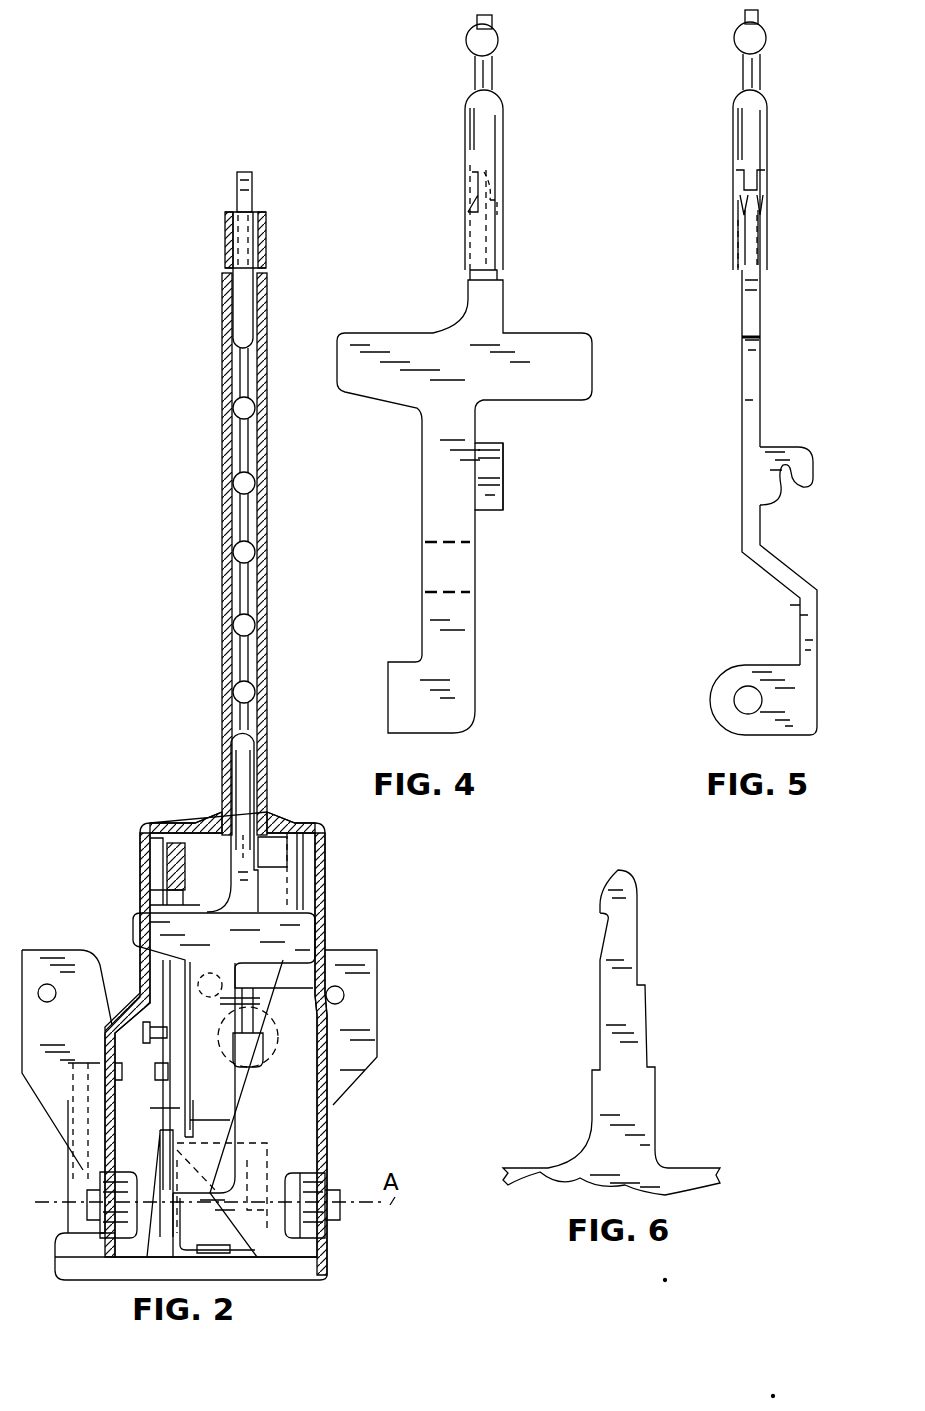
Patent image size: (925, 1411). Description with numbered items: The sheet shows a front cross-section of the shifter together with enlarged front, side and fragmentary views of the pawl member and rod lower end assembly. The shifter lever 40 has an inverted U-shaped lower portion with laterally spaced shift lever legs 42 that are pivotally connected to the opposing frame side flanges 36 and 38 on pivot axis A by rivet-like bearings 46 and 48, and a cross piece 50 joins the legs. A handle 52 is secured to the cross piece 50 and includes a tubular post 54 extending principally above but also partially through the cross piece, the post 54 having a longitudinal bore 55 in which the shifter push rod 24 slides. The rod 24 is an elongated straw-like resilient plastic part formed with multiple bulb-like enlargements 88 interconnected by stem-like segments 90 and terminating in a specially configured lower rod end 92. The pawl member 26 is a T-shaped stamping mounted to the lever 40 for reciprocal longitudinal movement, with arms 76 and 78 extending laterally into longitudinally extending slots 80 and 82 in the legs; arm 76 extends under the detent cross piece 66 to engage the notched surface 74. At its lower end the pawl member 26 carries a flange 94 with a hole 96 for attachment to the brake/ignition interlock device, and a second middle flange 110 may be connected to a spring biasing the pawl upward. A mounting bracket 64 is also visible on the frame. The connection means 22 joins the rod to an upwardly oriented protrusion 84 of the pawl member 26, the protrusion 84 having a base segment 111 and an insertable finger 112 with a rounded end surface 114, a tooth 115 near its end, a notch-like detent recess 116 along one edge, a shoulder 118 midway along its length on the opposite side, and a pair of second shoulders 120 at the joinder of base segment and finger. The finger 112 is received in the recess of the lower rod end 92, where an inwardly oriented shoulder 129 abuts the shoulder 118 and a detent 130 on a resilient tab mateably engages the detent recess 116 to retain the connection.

In FIG. 2, the connection means 22 is at (230, 795).
In FIG. 4, the connection means 22 is at (545, 152).
In FIG. 5, the connection means 22 is at (805, 160).
In FIG. 2, the shifter push rod 24 is at (255, 190).
In FIG. 4, the shifter push rod 24 is at (500, 31).
In FIG. 5, the shifter push rod 24 is at (760, 19).
In FIG. 2, the pawl member 26 is at (250, 1053).
In FIG. 4, the pawl member 26 is at (536, 328).
In FIG. 5, the pawl member 26 is at (764, 332).
In FIG. 6, the pawl member 26 is at (620, 1032).
In FIG. 2, the side flange 36 is at (85, 1258).
In FIG. 2, the side flange 38 is at (330, 1265).
In FIG. 2, the shifter lever 40 is at (180, 678).
In FIG. 2, the shift lever leg 42 is at (142, 1015).
In FIG. 2, the rivet-like bearing 46 is at (93, 1212).
In FIG. 2, the rivet-like bearing 48 is at (322, 1210).
In FIG. 2, the cross piece 50 is at (185, 818).
In FIG. 2, the handle 52 is at (220, 540).
In FIG. 2, the tubular post 54 is at (258, 548).
In FIG. 2, the bore 55 is at (255, 672).
In FIG. 2, the mounting bracket 64 is at (165, 985).
In FIG. 2, the detent cross piece 66 is at (165, 858).
In FIG. 2, the notched surface 74 is at (158, 908).
In FIG. 2, the arm 76 is at (140, 932).
In FIG. 4, the arm 76 is at (358, 341).
In FIG. 2, the arm 78 is at (312, 922).
In FIG. 4, the arm 78 is at (572, 393).
In FIG. 5, the arm 78 is at (760, 368).
In FIG. 2, the slot 80 is at (150, 876).
In FIG. 2, the slot 82 is at (305, 895).
In FIG. 6, the protrusion 84 is at (658, 1088).
In FIG. 2, the bulb-like enlargement 88 is at (233, 408).
In FIG. 4, the bulb-like enlargement 88 is at (495, 50).
In FIG. 5, the bulb-like enlargement 88 is at (765, 48).
In FIG. 2, the stem-like segment 90 is at (240, 480).
In FIG. 4, the stem-like segment 90 is at (492, 88).
In FIG. 5, the stem-like segment 90 is at (762, 85).
In FIG. 2, the lower rod end 92 is at (257, 775).
In FIG. 4, the lower rod end 92 is at (476, 152).
In FIG. 5, the lower rod end 92 is at (765, 118).
In FIG. 4, the flange 94 is at (388, 703).
In FIG. 5, the flange 94 is at (740, 733).
In FIG. 5, the hole 96 is at (740, 700).
In FIG. 4, the second middle flange 110 is at (503, 488).
In FIG. 5, the second middle flange 110 is at (800, 447).
In FIG. 6, the base segment 111 is at (610, 1106).
In FIG. 6, the insertable finger 112 is at (600, 1003).
In FIG. 6, the rounded end surface 114 is at (630, 880).
In FIG. 6, the tooth 115 is at (600, 915).
In FIG. 6, the detent recess 116 is at (602, 930).
In FIG. 6, the shoulder 118 is at (645, 985).
In FIG. 6, the second shoulders 120 is at (650, 1065).
In FIG. 4, the inwardly oriented shoulder 129 is at (520, 224).
In FIG. 4, the detent 130 is at (468, 203).
In FIG. 5, the detent 130 is at (742, 212).